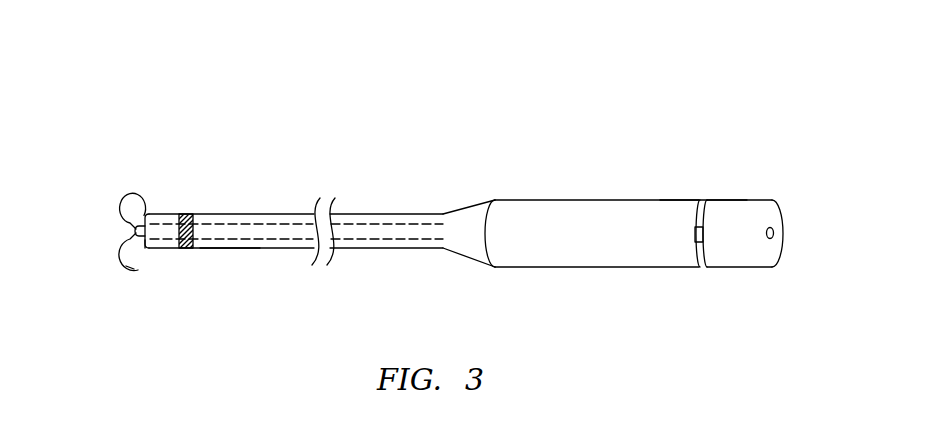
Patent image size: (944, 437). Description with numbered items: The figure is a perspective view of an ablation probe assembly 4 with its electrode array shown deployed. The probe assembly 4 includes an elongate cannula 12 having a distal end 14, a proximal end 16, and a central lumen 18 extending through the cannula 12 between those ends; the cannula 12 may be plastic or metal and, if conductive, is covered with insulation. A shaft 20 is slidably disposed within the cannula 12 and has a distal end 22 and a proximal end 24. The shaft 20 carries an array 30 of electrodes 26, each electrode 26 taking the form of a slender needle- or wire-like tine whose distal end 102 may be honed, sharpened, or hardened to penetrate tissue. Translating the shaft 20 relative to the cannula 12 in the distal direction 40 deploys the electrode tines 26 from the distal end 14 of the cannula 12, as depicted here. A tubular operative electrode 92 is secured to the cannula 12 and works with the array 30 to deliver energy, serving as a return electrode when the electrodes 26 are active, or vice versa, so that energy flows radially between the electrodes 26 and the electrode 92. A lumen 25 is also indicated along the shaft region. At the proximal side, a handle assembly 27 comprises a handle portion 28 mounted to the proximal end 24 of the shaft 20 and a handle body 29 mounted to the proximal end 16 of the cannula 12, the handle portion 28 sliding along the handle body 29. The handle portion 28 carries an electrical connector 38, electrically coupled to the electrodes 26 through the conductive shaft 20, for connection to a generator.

The probe assembly 4 is at (501, 155).
The elongate cannula 12 is at (367, 250).
The distal end 14 is at (146, 245).
The proximal end 16 is at (442, 250).
The central lumen 18 is at (237, 246).
The shaft 20 is at (388, 236).
The distal end 22 is at (142, 214).
The proximal end 24 is at (699, 267).
The upper lumen 25 is at (270, 229).
The electrode tines 26 is at (121, 203).
The handle assembly 27 is at (747, 200).
The handle portion 28 is at (744, 270).
The handle body 29 is at (608, 262).
The array of electrodes 30 is at (96, 228).
The electrical connector 38 is at (774, 232).
The distal direction 40 is at (122, 356).
The electrode 92 is at (189, 214).
The distal ends 102 is at (131, 269).